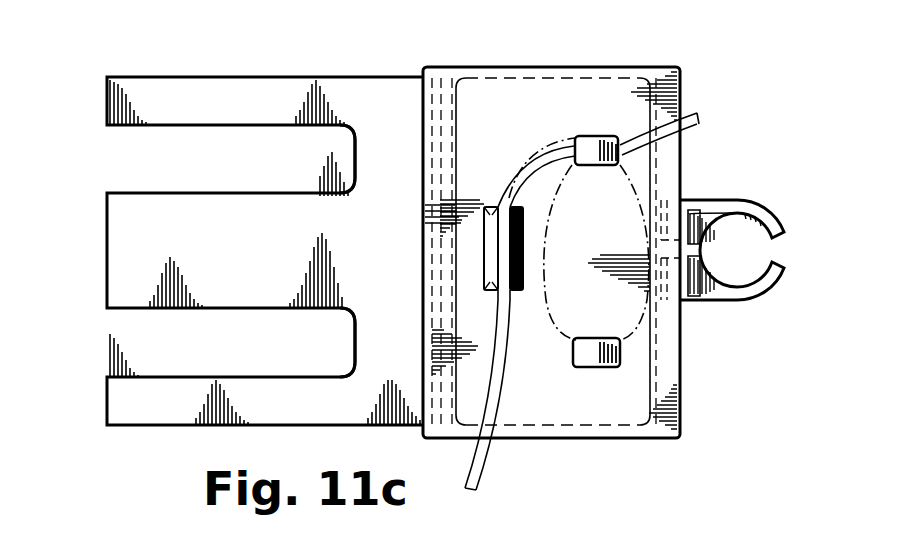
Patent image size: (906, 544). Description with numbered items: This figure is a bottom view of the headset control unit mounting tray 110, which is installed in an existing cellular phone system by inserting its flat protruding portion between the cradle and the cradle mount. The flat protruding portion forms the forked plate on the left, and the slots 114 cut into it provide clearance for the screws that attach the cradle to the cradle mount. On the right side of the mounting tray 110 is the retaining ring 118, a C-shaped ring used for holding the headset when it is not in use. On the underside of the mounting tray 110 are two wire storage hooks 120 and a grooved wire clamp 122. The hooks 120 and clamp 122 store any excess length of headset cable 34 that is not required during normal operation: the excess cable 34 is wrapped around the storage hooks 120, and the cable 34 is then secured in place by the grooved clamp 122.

The headset control unit mounting tray 110 is at (150, 447).
The slots 114 is at (110, 172).
The retaining ring 118 is at (740, 303).
The wire storage hooks 120 is at (600, 136).
The grooved wire clamp 122 is at (487, 205).
The headset cable 34 is at (486, 470).